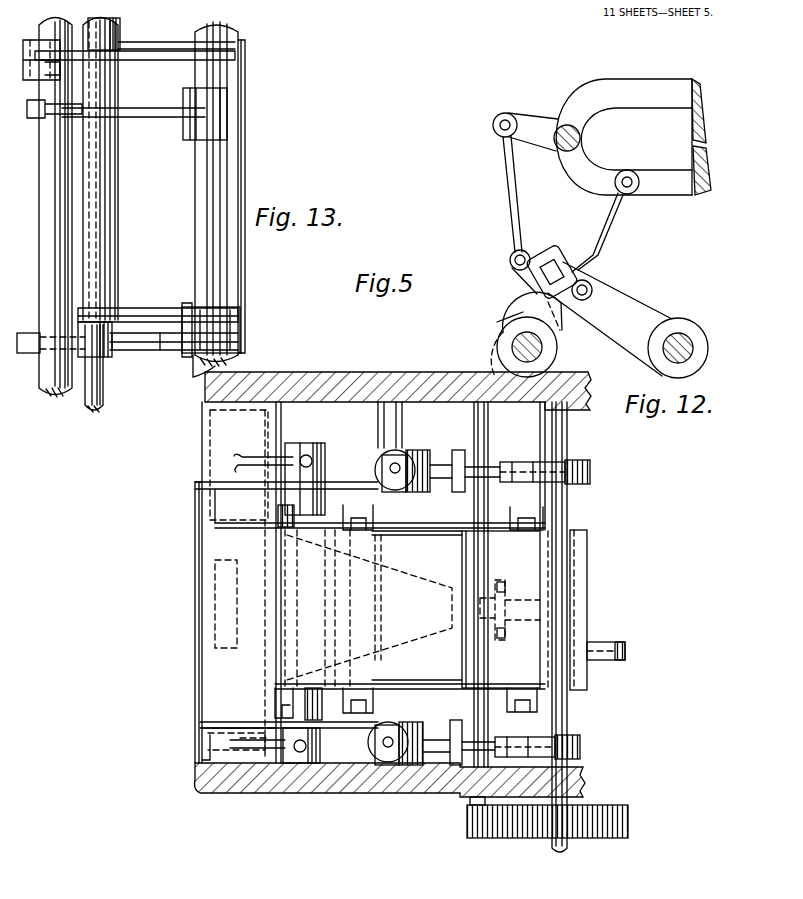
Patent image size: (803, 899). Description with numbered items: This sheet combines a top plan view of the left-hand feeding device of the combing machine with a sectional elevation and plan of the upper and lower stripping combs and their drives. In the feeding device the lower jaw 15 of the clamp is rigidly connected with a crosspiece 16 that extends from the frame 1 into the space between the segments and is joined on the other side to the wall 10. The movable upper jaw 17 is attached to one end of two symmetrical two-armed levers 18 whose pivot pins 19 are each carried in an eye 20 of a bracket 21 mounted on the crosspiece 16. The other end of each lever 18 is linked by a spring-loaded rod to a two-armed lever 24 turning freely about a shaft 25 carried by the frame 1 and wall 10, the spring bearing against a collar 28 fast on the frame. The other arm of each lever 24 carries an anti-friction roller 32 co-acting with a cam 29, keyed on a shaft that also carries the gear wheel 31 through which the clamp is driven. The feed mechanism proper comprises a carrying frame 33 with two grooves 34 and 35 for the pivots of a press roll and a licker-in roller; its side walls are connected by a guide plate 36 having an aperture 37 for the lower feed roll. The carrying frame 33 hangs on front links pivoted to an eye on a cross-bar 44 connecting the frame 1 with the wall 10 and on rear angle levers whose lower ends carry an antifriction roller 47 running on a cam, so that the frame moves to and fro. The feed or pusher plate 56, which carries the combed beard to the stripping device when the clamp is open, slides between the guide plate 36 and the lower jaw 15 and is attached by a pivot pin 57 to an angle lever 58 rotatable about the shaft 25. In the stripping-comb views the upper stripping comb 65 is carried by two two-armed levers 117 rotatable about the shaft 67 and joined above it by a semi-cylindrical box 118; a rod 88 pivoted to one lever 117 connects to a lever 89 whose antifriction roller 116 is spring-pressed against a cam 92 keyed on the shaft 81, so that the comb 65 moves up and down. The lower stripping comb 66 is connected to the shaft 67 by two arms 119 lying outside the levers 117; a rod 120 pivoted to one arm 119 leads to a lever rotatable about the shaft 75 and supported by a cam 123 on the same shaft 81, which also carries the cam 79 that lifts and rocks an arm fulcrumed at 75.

In FIG. 5, the frame 1 is at (431, 375).
In FIG. 5, the side wall 10 is at (380, 796).
In FIG. 5, the lower jaw 15 is at (180, 735).
In FIG. 5, the crosspiece 16 is at (220, 448).
In FIG. 5, the upper jaw 17 is at (202, 550).
In FIG. 5, the two-armed levers 18 is at (333, 482).
In FIG. 5, the pivot pins 19 is at (326, 520).
In FIG. 5, the eye 20 is at (304, 444).
In FIG. 5, the bracket 21 is at (255, 456).
In FIG. 5, the two-armed lever 24 is at (500, 468).
In FIG. 5, the shaft 25 is at (476, 655).
In FIG. 5, the collar 28 is at (400, 455).
In FIG. 5, the cam 29 is at (586, 464).
In FIG. 5, the gear wheel 31 is at (523, 838).
In FIG. 5, the anti-friction roller 32 is at (533, 462).
In FIG. 5, the carrying frame 33 is at (433, 523).
In FIG. 5, the groove 34 is at (376, 520).
In FIG. 5, the groove 35 is at (522, 513).
In FIG. 5, the guide plate 36 is at (486, 610).
In FIG. 5, the aperture 37 is at (380, 546).
In FIG. 5, the cross-bar 44 is at (389, 372).
In FIG. 5, the antifriction roller 47 is at (625, 651).
In FIG. 5, the feed or pusher plate 56 is at (195, 535).
In FIG. 5, the pivot pin 57 is at (588, 578).
In FIG. 5, the angle lever 58 is at (575, 603).
In FIG. 13, the upper stripping comb 65 is at (239, 158).
In FIG. 12, the upper stripping comb 65 is at (702, 123).
In FIG. 13, the lower stripping comb 66 is at (239, 187).
In FIG. 12, the lower stripping comb 66 is at (707, 158).
In FIG. 13, the shaft 67 is at (103, 38).
In FIG. 12, the shaft 67 is at (579, 135).
In FIG. 13, the shaft 75 is at (230, 353).
In FIG. 12, the shaft 75 is at (680, 333).
In FIG. 12, the cam 79 is at (525, 299).
In FIG. 13, the shaft 81 is at (43, 385).
In FIG. 12, the shaft 81 is at (542, 348).
In FIG. 13, the rod 88 is at (52, 78).
In FIG. 12, the rod 88 is at (513, 187).
In FIG. 13, the lever 89 is at (173, 115).
In FIG. 12, the lever 89 is at (632, 308).
In FIG. 13, the cam 92 is at (30, 103).
In FIG. 12, the cam 92 is at (555, 318).
In FIG. 12, the antifriction roller 116 is at (557, 255).
In FIG. 13, the levers 117 is at (175, 62).
In FIG. 12, the levers 117 is at (587, 91).
In FIG. 12, the semi-cylindrical box 118 is at (563, 118).
In FIG. 13, the arms 119 is at (188, 45).
In FIG. 12, the arms 119 is at (657, 191).
In FIG. 13, the rod 120 is at (138, 314).
In FIG. 12, the rod 120 is at (607, 244).
In FIG. 13, the cam 123 is at (30, 348).
In FIG. 12, the cam 123 is at (519, 316).